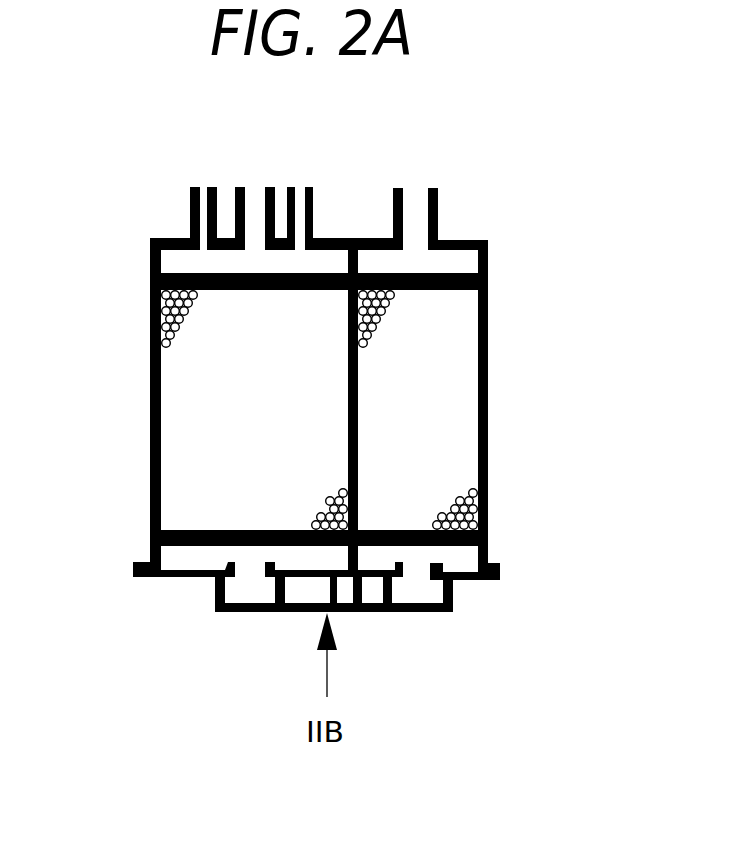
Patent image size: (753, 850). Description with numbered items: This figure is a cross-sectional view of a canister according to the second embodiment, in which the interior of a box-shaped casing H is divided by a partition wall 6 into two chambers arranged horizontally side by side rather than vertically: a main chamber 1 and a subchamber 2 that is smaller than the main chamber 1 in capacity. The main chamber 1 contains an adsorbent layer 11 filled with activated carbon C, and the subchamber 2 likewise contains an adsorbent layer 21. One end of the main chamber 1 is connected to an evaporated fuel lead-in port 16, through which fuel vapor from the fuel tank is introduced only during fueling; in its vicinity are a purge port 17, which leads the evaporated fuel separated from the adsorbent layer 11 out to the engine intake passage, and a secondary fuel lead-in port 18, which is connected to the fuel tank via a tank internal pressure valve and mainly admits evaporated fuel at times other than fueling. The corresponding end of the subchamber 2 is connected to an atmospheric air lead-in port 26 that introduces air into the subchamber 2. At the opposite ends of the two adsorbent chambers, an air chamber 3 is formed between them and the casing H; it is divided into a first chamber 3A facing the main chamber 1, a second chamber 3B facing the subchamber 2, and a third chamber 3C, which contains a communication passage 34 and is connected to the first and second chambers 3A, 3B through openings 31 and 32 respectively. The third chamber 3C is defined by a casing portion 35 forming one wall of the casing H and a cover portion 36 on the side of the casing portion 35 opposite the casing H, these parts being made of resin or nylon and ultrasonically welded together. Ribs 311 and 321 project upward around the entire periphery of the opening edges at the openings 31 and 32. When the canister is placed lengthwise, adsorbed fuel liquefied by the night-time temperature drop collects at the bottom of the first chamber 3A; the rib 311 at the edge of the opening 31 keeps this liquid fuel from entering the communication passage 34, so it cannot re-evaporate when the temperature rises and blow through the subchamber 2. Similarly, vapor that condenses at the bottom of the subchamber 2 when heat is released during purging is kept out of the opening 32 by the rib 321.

The casing H is at (142, 230).
The main chamber 1 is at (150, 393).
The subchamber 2 is at (488, 320).
The partition wall 6 is at (372, 262).
The adsorbent layer 11 is at (212, 432).
The adsorbent layer 21 is at (435, 422).
The evaporated fuel lead-in port 16 is at (255, 196).
The purge port 17 is at (203, 193).
The secondary fuel lead-in port 18 is at (300, 193).
The atmospheric air lead-in port 26 is at (415, 203).
The activated carbon C is at (150, 307).
The air chamber 3 is at (355, 612).
The first chamber 3A is at (163, 555).
The second chamber 3B is at (488, 578).
The third chamber 3C is at (445, 613).
The opening 31 is at (250, 567).
The rib 311 is at (197, 579).
The opening 32 is at (415, 568).
The rib 321 is at (440, 563).
The communication passage 34 is at (292, 590).
The casing portion 35 is at (150, 580).
The cover portion 36 is at (432, 606).